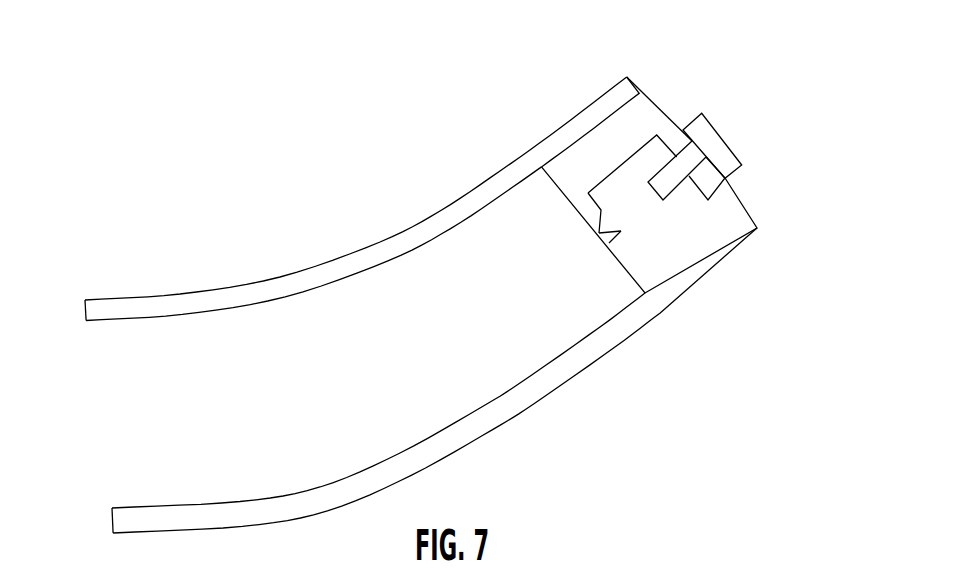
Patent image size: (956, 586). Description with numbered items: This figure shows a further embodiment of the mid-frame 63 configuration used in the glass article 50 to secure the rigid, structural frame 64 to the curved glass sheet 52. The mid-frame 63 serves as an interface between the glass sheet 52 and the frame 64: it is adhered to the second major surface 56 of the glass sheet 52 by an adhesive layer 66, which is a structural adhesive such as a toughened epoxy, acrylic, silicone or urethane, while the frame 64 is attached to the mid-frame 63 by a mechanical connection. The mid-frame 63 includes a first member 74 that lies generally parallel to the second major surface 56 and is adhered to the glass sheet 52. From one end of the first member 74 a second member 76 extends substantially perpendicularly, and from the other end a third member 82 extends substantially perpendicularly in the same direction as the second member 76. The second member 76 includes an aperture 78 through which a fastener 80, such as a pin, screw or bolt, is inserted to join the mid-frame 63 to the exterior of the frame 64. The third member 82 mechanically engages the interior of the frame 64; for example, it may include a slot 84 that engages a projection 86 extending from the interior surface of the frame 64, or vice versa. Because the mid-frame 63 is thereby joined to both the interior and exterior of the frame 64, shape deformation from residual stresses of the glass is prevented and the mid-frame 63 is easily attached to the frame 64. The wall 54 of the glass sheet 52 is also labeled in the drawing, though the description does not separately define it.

The glass article 50 is at (130, 222).
The glass sheet 52 is at (284, 275).
The first panel wall 54 is at (412, 226).
The second major surface 56 is at (380, 270).
The mid-frame 63 is at (665, 98).
The frame 64 is at (220, 504).
The adhesive layer 66 is at (607, 136).
The first member 74 is at (598, 172).
The second member 76 is at (676, 124).
The aperture 78 is at (712, 180).
The fastener 80 is at (722, 138).
The third member 82 is at (577, 205).
The slot 84 is at (588, 230).
The projection 86 is at (599, 244).